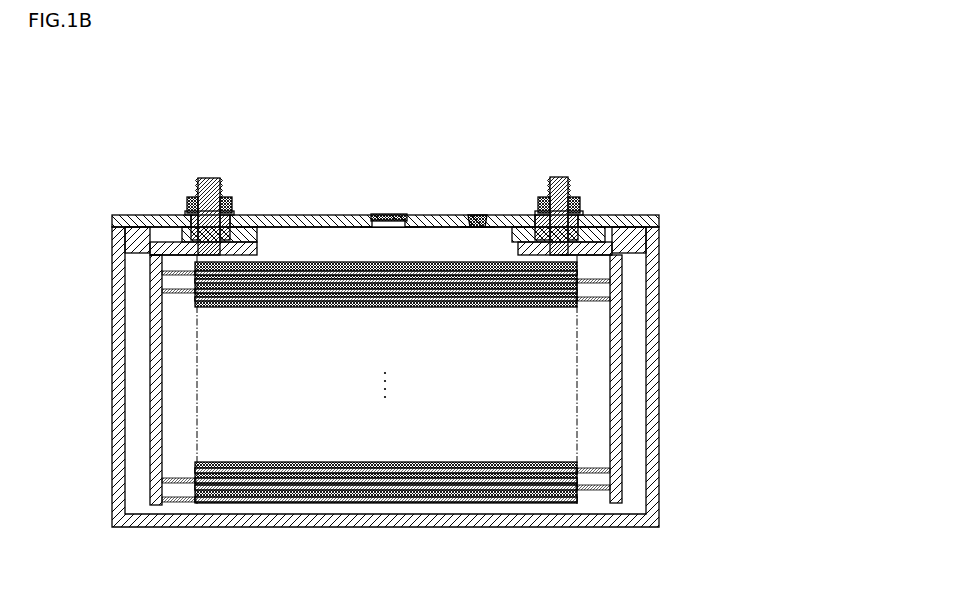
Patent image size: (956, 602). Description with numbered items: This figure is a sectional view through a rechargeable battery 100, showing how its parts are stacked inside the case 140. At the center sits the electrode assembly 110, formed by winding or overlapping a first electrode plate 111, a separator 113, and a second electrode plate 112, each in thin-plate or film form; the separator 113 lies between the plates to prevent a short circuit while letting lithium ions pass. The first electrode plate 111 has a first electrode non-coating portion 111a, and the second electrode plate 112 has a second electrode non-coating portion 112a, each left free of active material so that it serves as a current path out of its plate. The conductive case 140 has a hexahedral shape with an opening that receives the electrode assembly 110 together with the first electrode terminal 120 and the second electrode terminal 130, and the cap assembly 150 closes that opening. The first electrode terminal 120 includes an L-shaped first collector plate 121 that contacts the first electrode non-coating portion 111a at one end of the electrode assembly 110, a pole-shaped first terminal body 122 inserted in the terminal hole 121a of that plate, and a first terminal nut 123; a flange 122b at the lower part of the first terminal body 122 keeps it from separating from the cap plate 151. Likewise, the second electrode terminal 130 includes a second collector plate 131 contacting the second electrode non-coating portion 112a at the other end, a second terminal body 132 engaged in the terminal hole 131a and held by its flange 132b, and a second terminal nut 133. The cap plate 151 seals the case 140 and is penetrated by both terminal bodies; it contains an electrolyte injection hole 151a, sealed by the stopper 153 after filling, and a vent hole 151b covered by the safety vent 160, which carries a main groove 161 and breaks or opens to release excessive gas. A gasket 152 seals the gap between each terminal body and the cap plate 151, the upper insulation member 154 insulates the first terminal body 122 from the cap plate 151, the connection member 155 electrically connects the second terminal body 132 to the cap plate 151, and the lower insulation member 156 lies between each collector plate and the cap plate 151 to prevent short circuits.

The rechargeable battery 100 is at (683, 92).
The electrode assembly 110 is at (386, 415).
The first electrode plate 111 is at (287, 503).
The first electrode non-coating portion 111a is at (182, 504).
The second electrode plate 112 is at (517, 503).
The second electrode non-coating portion 112a is at (597, 489).
The separator 113 is at (399, 492).
The first electrode terminal 120 is at (237, 137).
The first collector plate 121 is at (165, 240).
The terminal hole 121a is at (200, 255).
The first terminal body 122 is at (196, 205).
The flange 122b is at (252, 238).
The first terminal nut 123 is at (224, 199).
The second electrode terminal 130 is at (632, 137).
The second collector plate 131 is at (600, 238).
The terminal hole 131a is at (567, 254).
The second terminal body 132 is at (574, 199).
The flange 132b is at (516, 234).
The second terminal nut 133 is at (546, 200).
The case 140 is at (659, 296).
The cap assembly 150 is at (444, 144).
The cap plate 151 is at (432, 215).
The electrolyte injection hole 151a is at (477, 228).
The vent hole 151b is at (383, 228).
The gasket 152 is at (233, 226).
The stopper 153 is at (477, 215).
The upper insulation member 154 is at (233, 210).
The connection member 155 is at (540, 208).
The lower insulation member 156 is at (125, 236).
The safety vent 160 is at (373, 215).
The main groove 161 is at (393, 215).